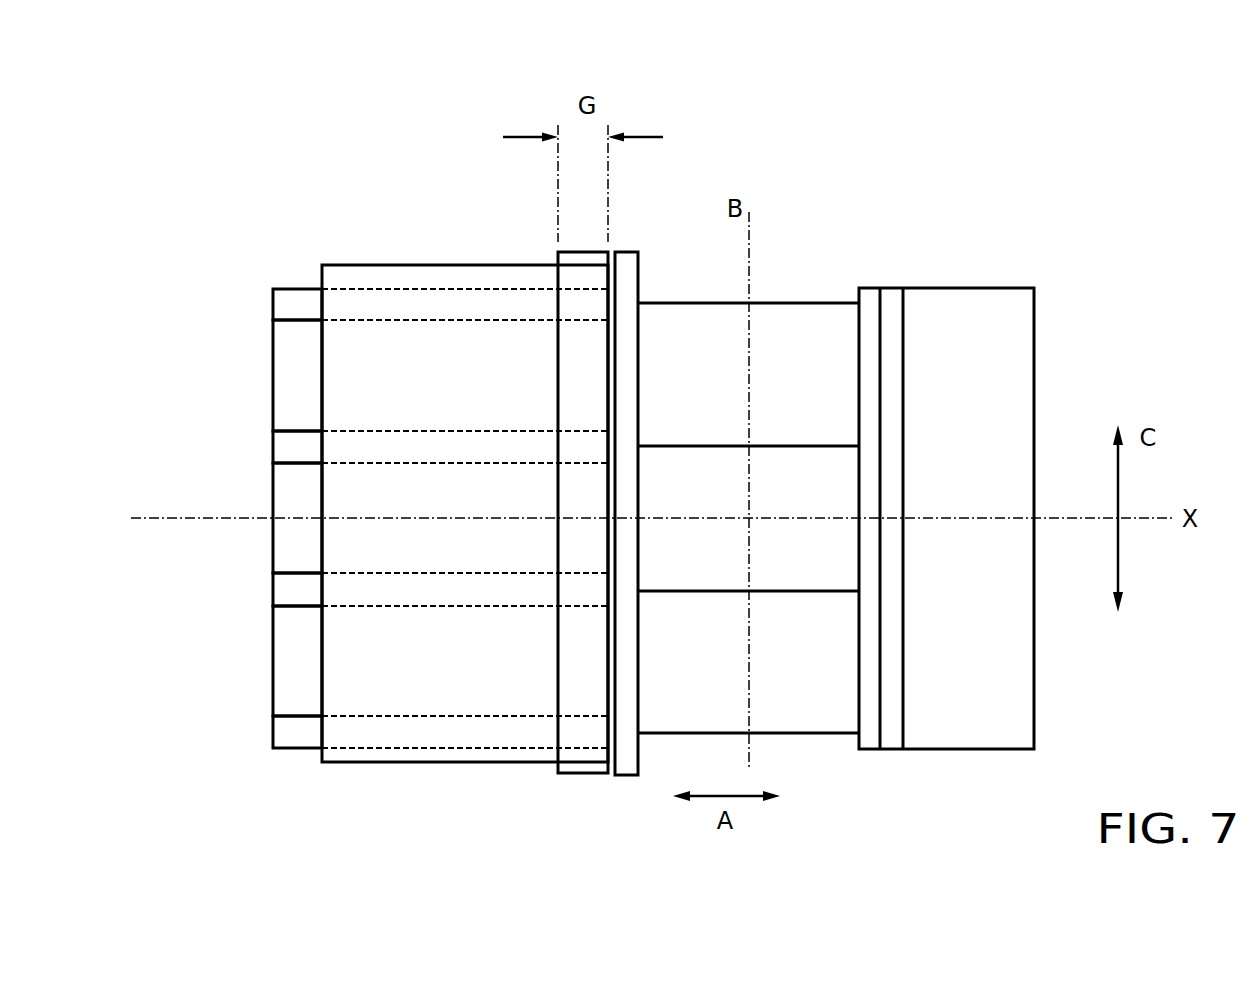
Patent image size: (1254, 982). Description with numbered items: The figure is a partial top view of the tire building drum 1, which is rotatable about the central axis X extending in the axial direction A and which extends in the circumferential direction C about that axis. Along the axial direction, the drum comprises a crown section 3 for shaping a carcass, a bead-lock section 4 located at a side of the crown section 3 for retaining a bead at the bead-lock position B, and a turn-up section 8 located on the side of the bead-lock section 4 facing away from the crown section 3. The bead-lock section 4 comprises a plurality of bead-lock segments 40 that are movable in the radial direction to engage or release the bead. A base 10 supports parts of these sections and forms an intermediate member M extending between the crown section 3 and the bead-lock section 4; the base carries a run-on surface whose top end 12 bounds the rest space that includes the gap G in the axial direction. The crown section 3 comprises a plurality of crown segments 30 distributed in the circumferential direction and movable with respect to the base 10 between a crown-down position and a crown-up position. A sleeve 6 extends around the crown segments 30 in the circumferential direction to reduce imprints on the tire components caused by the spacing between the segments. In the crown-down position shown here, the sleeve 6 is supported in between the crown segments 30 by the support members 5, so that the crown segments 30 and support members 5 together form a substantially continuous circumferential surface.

The tire building drum 1 is at (1176, 196).
The crown section 3 is at (390, 132).
The bead-lock section 4 is at (752, 140).
The support members 5 is at (293, 307).
The sleeve 6 is at (420, 279).
The turn-up section 8 is at (969, 141).
The base 10 is at (575, 768).
The top end 12 is at (630, 763).
The crown segments 30 is at (283, 365).
The bead-lock segments 40 is at (802, 315).